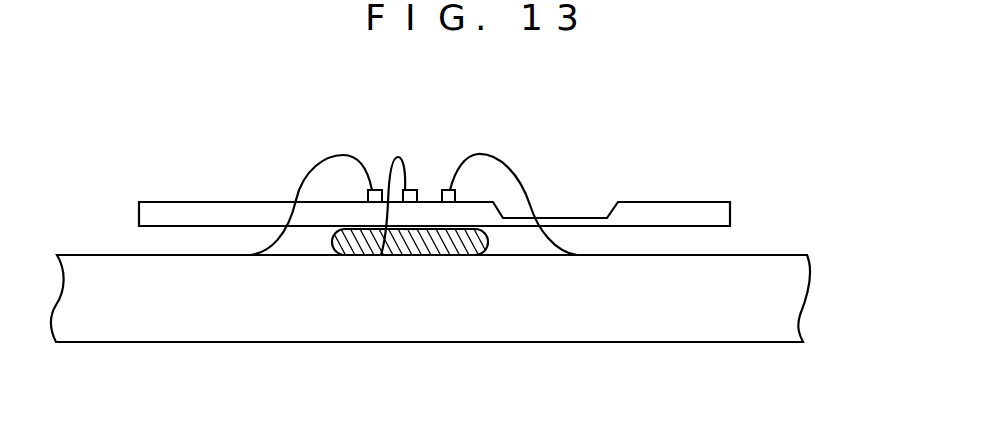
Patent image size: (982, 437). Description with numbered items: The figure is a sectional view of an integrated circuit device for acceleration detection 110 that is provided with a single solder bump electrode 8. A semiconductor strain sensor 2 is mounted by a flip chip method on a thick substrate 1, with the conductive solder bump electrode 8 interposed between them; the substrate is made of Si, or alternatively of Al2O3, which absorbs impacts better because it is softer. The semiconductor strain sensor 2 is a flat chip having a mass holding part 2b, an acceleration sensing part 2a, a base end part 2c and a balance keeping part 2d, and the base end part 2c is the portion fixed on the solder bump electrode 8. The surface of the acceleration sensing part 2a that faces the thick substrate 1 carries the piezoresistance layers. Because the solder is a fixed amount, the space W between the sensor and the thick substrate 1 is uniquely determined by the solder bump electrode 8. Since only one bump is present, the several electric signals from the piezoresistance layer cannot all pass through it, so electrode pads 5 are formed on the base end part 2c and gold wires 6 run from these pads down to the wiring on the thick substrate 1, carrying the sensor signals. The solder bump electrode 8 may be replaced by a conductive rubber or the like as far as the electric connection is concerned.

The thick substrate 1 is at (792, 290).
The semiconductor strain sensor 2 is at (146, 219).
The acceleration sensing part 2a is at (568, 218).
The mass holding part 2b is at (680, 208).
The base end part 2c is at (427, 212).
The balance keeping part 2d is at (196, 213).
The electrode pad 5 is at (377, 183).
The gold wire 6 is at (323, 158).
The solder bump electrode 8 is at (412, 257).
The integrated circuit device for acceleration detection 110 is at (560, 90).
The space W is at (722, 226).